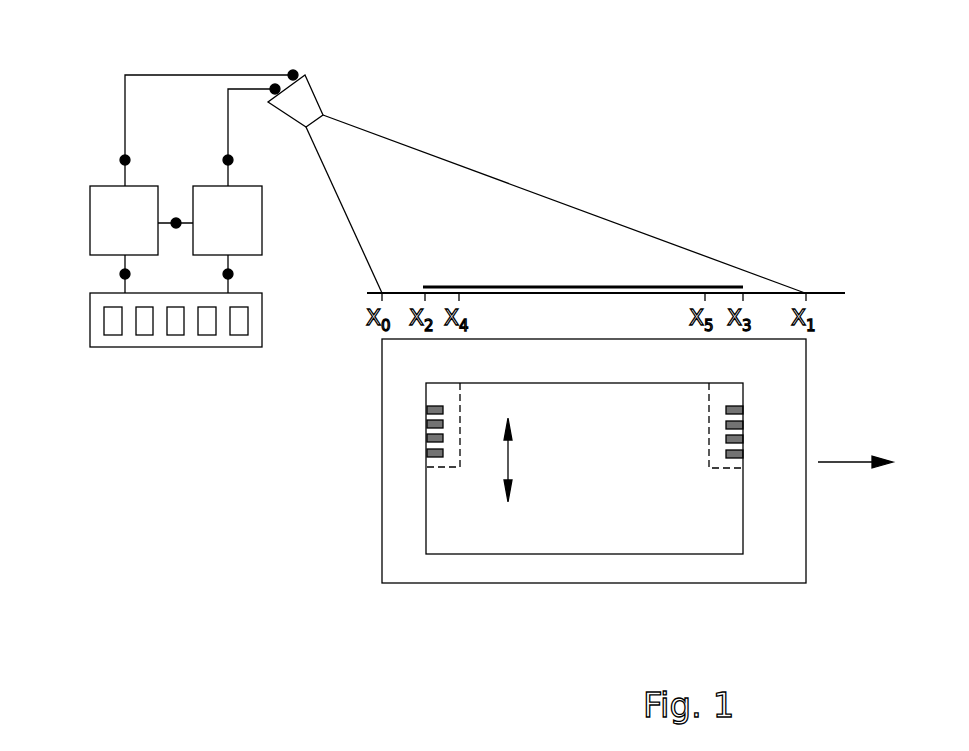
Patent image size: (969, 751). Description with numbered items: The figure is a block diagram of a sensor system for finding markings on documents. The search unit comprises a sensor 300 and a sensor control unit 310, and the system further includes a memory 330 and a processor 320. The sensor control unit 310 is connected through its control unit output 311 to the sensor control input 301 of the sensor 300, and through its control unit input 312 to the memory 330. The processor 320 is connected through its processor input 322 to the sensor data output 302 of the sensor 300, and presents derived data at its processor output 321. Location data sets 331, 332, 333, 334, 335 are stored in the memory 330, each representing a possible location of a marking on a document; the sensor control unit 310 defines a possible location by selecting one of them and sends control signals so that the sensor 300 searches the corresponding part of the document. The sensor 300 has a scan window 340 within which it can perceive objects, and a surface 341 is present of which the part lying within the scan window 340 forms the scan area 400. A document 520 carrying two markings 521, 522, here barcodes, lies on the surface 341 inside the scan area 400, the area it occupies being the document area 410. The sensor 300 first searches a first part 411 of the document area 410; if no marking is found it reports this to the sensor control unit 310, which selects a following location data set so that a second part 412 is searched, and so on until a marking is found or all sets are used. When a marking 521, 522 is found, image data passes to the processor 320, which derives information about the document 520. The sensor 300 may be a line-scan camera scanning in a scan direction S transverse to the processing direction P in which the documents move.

The sensor 300 is at (298, 103).
The sensor control input 301 is at (274, 87).
The sensor data output 302 is at (291, 73).
The sensor control unit 310 is at (210, 236).
The control unit output 311 is at (234, 160).
The control unit input 312 is at (234, 272).
The processor 320 is at (106, 236).
The processor output 321 is at (120, 272).
The processor input 322 is at (120, 160).
The memory 330 is at (263, 315).
The location data set 331 is at (112, 326).
The location data set 332 is at (143, 326).
The location data set 333 is at (175, 326).
The location data set 334 is at (207, 326).
The location data set 335 is at (238, 326).
The scan window 340 is at (326, 139).
The surface 341 is at (823, 293).
The scan area 400 is at (400, 370).
The document area 410 is at (443, 545).
The first part 411 is at (443, 398).
The second part 412 is at (726, 398).
The document 520 is at (560, 287).
The marking 521 is at (430, 437).
The marking 522 is at (743, 438).
The scan direction S is at (510, 455).
The processing direction P is at (848, 466).